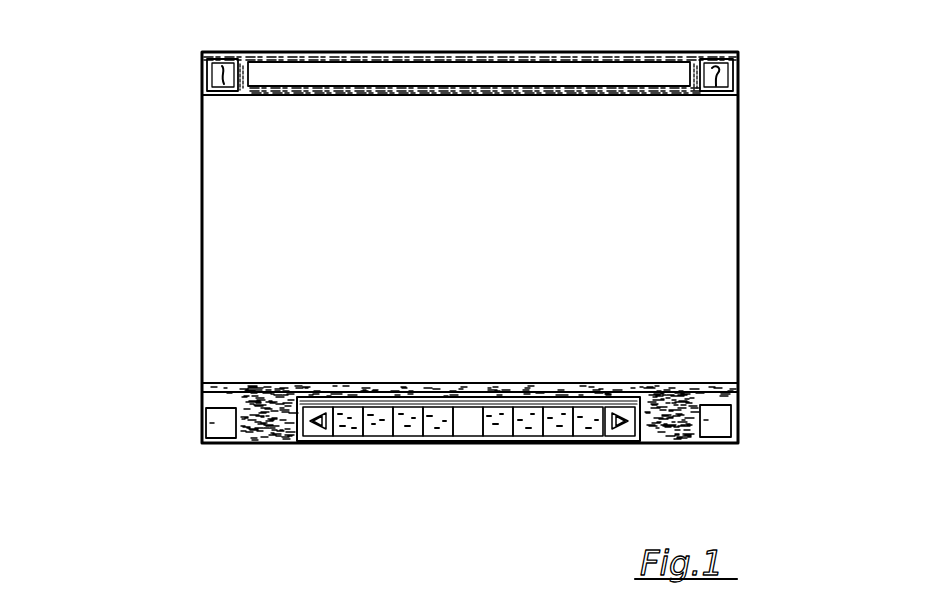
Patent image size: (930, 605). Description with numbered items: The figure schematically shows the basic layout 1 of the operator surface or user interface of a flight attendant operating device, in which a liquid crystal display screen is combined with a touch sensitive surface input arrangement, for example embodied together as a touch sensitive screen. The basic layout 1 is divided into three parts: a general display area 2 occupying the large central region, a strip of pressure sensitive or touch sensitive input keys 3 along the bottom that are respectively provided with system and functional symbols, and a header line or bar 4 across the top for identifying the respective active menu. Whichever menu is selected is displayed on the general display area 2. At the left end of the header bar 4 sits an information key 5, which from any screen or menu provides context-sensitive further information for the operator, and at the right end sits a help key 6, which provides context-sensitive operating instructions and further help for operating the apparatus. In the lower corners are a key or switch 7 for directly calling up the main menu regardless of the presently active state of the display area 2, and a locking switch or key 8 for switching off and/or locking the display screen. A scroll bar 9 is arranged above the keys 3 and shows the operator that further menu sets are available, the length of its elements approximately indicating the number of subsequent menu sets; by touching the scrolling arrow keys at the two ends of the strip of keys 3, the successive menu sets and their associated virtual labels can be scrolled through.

The basic layout 1 is at (178, 238).
The general display area 2 is at (592, 208).
The touch sensitive input keys 3 is at (477, 464).
The header line or bar 4 is at (452, 58).
The information key 5 is at (195, 62).
The help key 6 is at (758, 52).
The main menu key 7 is at (758, 453).
The locking switch 8 is at (190, 452).
The scroll bar 9 is at (400, 405).